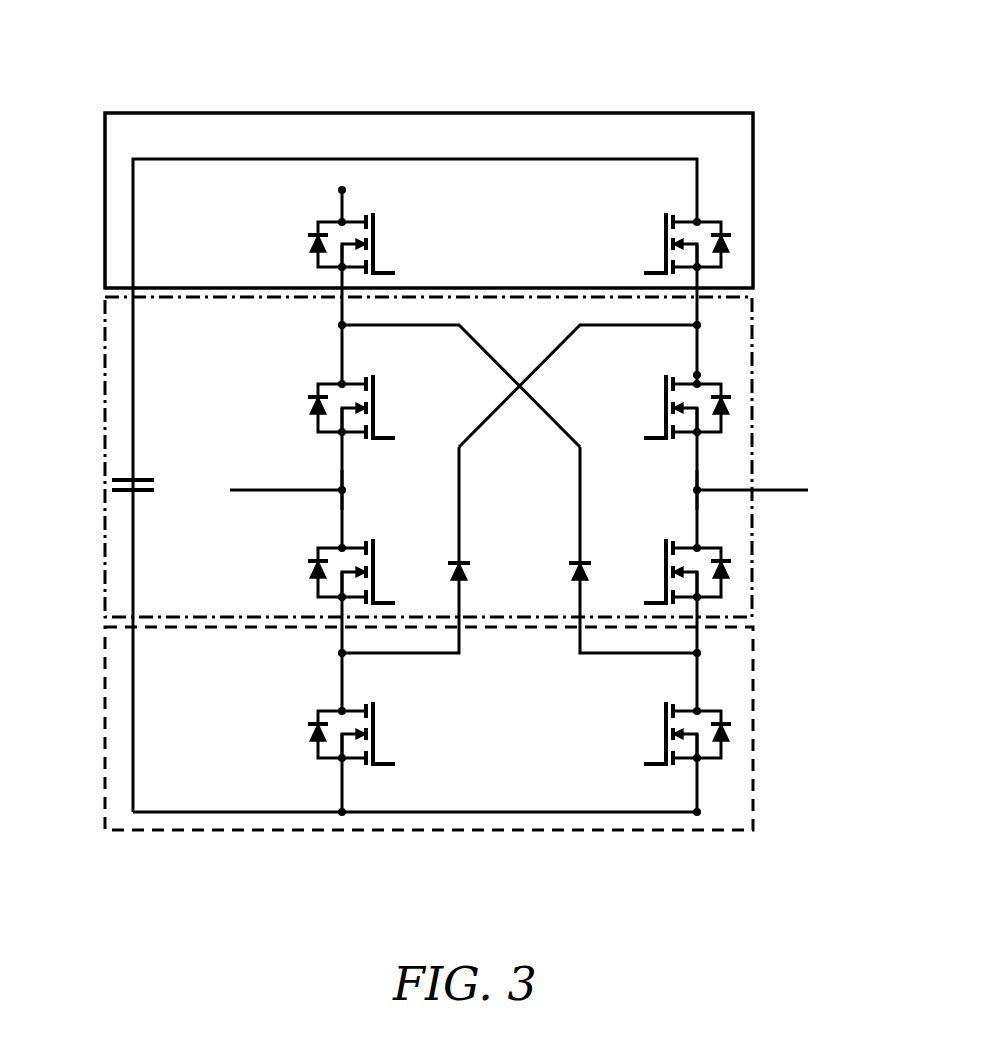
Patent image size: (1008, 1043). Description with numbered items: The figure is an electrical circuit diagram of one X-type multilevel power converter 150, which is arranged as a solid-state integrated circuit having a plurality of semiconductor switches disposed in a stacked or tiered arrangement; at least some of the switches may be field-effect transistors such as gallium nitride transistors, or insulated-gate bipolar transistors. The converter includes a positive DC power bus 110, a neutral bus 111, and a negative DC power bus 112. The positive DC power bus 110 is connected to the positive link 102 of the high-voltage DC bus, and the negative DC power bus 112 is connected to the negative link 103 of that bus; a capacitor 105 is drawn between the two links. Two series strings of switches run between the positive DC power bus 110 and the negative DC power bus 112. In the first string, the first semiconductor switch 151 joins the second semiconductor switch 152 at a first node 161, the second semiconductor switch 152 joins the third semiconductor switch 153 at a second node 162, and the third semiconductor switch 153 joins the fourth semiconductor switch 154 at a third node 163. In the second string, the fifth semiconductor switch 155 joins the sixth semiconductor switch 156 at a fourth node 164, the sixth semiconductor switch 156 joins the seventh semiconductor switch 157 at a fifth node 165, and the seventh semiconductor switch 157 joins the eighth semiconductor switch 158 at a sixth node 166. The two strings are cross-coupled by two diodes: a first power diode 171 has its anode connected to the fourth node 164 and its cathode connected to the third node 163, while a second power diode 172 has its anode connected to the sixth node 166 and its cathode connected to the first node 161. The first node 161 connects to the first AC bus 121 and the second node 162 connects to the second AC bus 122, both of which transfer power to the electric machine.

The X-type multilevel power converter 150 is at (281, 96).
The positive link 102 is at (133, 159).
The negative link 103 is at (133, 812).
The capacitor 105 is at (122, 478).
The positive DC power bus 110 is at (753, 172).
The neutral bus 111 is at (752, 447).
The negative DC power bus 112 is at (752, 690).
The first AC bus 121 is at (780, 479).
The second AC bus 122 is at (263, 479).
The first semiconductor switch S1 151 is at (737, 239).
The second semiconductor switch S2 152 is at (737, 405).
The third semiconductor switch S3 153 is at (737, 569).
The fourth semiconductor switch S4 154 is at (737, 734).
The fifth semiconductor switch S5 155 is at (300, 239).
The sixth semiconductor switch S6 156 is at (300, 406).
The seventh semiconductor switch S7 157 is at (300, 571).
The eighth semiconductor switch S8 158 is at (300, 734).
The first node 161 is at (697, 325).
The second node 162 is at (697, 490).
The third node 163 is at (697, 653).
The fourth node 164 is at (342, 325).
The fifth node 165 is at (342, 490).
The sixth node 166 is at (342, 653).
The first power diode 171 is at (600, 572).
The second power diode 172 is at (440, 572).